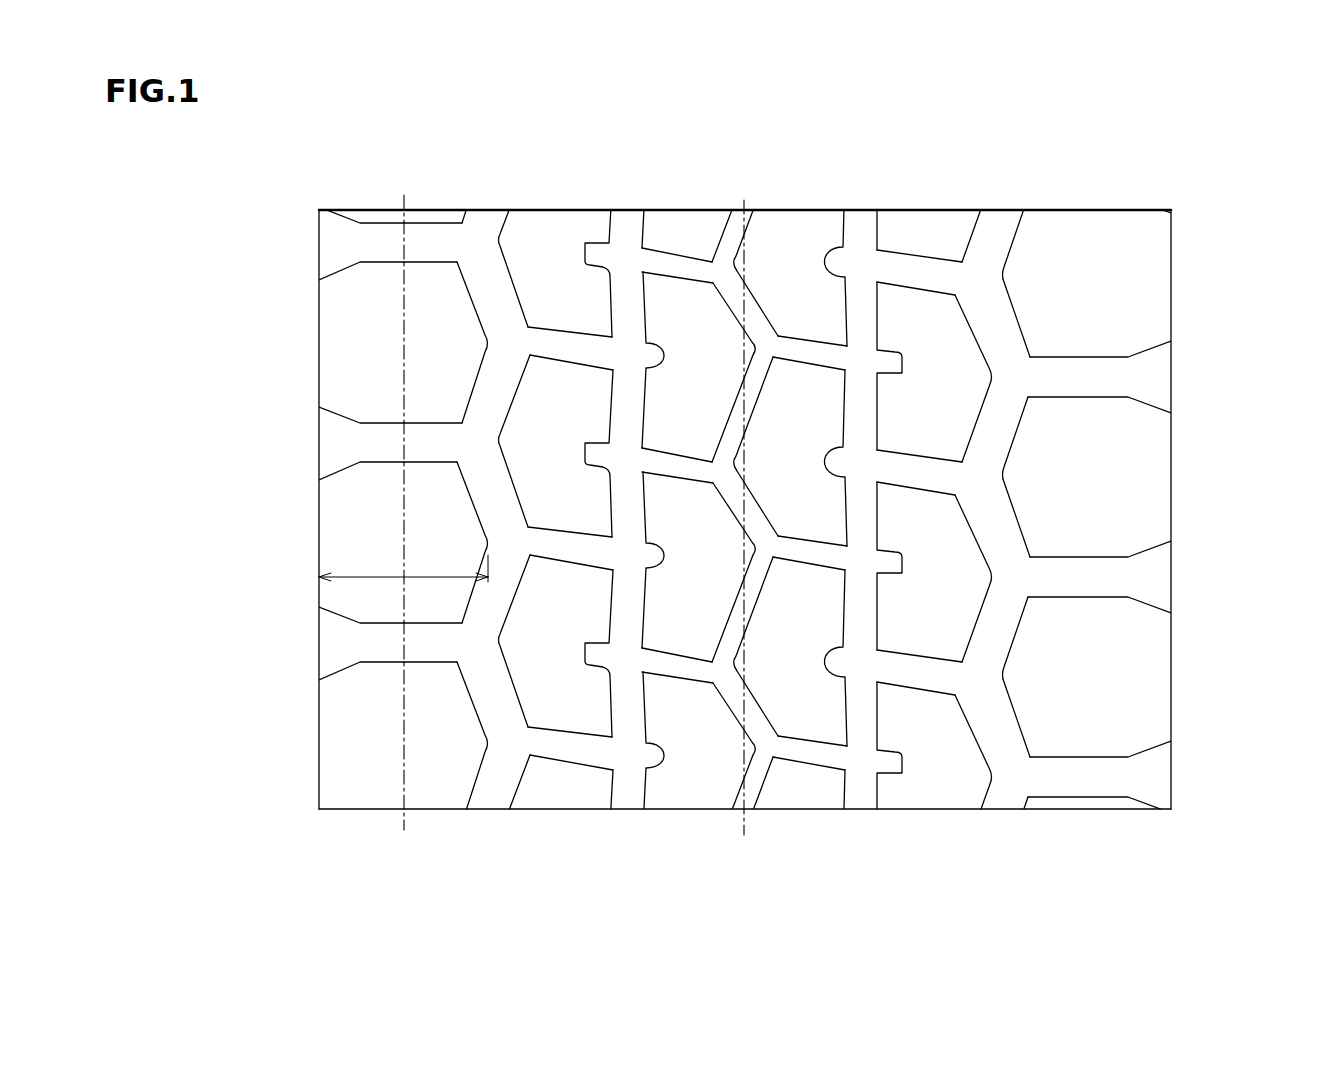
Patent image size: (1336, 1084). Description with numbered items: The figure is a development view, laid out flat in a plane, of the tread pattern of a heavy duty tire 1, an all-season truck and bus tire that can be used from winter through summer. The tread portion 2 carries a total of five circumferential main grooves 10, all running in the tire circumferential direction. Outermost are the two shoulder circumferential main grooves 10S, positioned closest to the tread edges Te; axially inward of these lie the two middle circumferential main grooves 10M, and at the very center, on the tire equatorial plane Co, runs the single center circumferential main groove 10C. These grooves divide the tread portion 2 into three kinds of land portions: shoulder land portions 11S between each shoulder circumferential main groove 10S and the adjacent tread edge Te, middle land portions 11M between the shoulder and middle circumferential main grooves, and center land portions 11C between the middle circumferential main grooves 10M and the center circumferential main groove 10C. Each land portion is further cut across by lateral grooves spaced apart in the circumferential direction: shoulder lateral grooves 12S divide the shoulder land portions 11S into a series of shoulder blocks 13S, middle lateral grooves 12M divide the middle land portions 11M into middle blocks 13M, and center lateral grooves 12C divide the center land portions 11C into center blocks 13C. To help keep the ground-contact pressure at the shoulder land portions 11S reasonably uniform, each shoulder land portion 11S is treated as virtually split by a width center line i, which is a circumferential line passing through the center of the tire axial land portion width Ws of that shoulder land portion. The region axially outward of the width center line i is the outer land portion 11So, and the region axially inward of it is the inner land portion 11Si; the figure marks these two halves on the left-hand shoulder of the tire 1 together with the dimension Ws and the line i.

The heavy duty tire 1 is at (790, 470).
The tread portion 2 is at (1154, 201).
The circumferential main grooves 10 is at (742, 509).
The shoulder circumferential main grooves 10S is at (745, 505).
The middle circumferential main grooves 10M is at (745, 510).
The center circumferential main groove 10C is at (744, 509).
The shoulder land portions 11S is at (745, 505).
The outer land portion 11So is at (361, 443).
The inner land portion 11Si is at (433, 442).
The middle land portions 11M is at (745, 510).
The center land portions 11C is at (744, 509).
The shoulder lateral grooves 12S is at (743, 509).
The middle lateral grooves 12M is at (743, 509).
The center lateral grooves 12C is at (745, 509).
The shoulder blocks 13S is at (1099, 505).
The middle blocks 13M is at (919, 472).
The center blocks 13C is at (810, 553).
The tread edge Te is at (319, 314).
The tire equatorial plane Co is at (745, 503).
The land portion width Ws is at (403, 567).
The width center line i is at (404, 703).